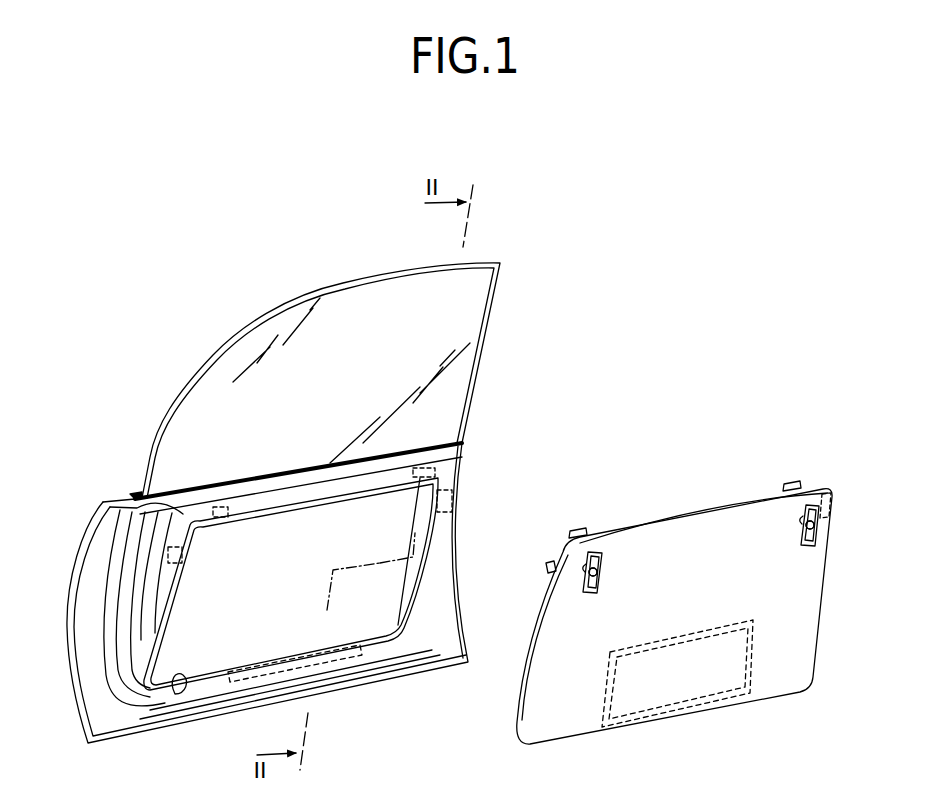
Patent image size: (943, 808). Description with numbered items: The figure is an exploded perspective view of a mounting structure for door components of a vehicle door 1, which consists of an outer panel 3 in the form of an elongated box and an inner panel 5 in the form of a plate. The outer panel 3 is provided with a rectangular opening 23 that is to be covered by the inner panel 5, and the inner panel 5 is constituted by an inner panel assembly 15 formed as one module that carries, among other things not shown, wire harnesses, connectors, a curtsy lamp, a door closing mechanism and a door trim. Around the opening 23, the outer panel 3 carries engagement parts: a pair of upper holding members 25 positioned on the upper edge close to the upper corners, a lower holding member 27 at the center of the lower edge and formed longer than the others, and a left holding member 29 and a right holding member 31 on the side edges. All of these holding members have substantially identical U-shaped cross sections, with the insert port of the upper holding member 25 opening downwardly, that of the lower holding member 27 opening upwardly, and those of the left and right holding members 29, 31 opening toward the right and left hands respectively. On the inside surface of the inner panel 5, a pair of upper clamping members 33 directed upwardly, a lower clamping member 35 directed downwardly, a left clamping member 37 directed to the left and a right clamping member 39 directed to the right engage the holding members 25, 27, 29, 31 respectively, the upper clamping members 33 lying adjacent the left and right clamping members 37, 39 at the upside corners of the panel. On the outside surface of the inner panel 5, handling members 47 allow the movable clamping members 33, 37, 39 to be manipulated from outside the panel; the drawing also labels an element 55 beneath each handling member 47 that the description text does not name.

The vehicle door 1 is at (545, 266).
The outer panel 3 is at (96, 499).
The inner panel 5 is at (700, 506).
The inner panel assembly 15 is at (742, 458).
The opening 23 is at (175, 694).
The upper holding member 25 is at (225, 517).
The lower holding member 27 is at (233, 690).
The left holding member 29 is at (182, 556).
The right holding member 31 is at (448, 499).
The upper clamping member 33 is at (578, 528).
The lower clamping member 35 is at (684, 712).
The left clamping member 37 is at (548, 561).
The right clamping member 39 is at (829, 495).
The handling member 47 is at (609, 566).
The bracket 55 is at (589, 594).